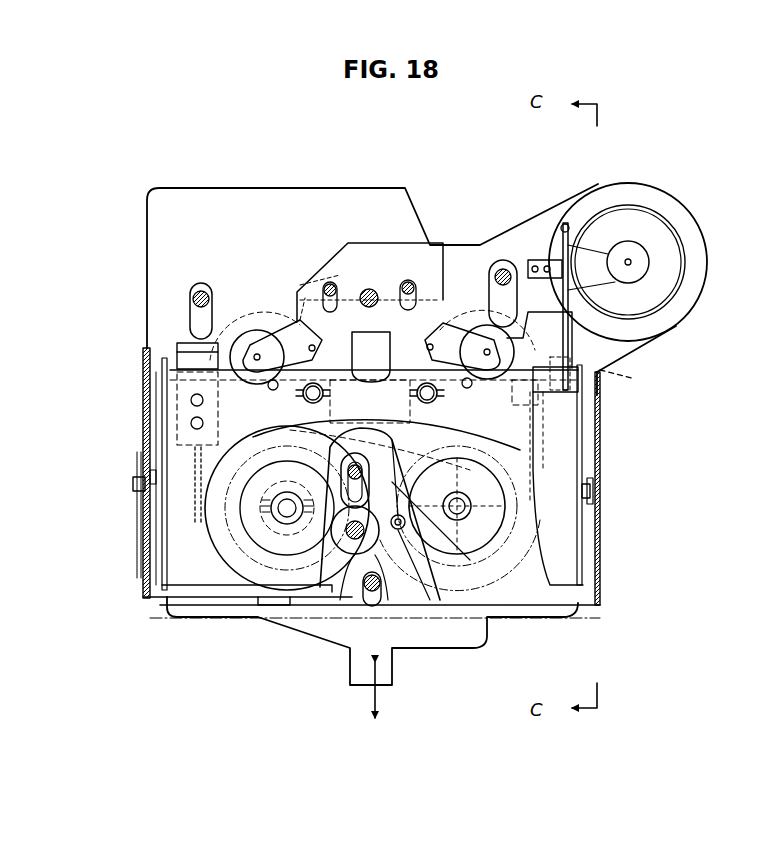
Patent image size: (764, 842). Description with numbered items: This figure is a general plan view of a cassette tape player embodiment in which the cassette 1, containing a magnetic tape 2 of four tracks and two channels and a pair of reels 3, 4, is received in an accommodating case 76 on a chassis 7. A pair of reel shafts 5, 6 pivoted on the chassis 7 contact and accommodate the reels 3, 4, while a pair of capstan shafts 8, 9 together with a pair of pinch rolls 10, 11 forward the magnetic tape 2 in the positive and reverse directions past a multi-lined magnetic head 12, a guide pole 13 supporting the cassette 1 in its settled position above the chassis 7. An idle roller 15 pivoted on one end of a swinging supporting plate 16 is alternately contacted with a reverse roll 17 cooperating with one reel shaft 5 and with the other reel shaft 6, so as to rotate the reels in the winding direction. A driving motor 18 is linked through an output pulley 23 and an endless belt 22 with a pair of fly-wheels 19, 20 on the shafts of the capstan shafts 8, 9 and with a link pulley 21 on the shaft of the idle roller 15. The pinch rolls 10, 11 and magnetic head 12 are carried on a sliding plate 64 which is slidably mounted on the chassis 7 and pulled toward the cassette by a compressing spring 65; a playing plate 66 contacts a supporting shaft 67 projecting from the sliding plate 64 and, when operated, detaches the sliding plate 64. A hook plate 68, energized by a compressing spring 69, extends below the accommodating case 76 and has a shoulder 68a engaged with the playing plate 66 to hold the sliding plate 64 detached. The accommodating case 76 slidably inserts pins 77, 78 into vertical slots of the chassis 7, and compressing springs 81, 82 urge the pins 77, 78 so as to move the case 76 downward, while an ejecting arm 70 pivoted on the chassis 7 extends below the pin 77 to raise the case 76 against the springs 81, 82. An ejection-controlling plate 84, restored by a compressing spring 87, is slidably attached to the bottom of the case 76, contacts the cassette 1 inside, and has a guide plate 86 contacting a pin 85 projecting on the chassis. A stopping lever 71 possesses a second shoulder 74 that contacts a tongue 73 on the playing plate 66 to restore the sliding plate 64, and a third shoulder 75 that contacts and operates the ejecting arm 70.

The cassette 1 is at (560, 620).
The magnetic tape 2 is at (547, 428).
The reel 3 is at (202, 565).
The reel 4 is at (505, 560).
The reel shaft 5 is at (280, 522).
The reel shaft 6 is at (462, 514).
The chassis 7 is at (600, 562).
The capstan shaft 8 is at (268, 393).
The capstan shaft 9 is at (453, 430).
The pinch roll 10 is at (255, 333).
The pinch roll 11 is at (555, 338).
The multi-lined magnetic head 12 is at (370, 347).
The guide pole 13 is at (305, 400).
The idle roller 15 is at (403, 567).
The swinging supporting plate 16 is at (392, 482).
The reverse roll 17 is at (343, 562).
The driving motor 18 is at (647, 222).
The fly-wheel 19 is at (266, 312).
The fly-wheel 20 is at (452, 303).
The link pulley 21 is at (405, 540).
The endless belt 22 is at (612, 262).
The output pulley 23 is at (650, 262).
The sliding plate 64 is at (338, 265).
The compressing spring 65 is at (407, 442).
The playing plate 66 is at (540, 320).
The supporting shaft 67 is at (368, 288).
The hook plate 68 is at (650, 343).
The shoulder 68a is at (634, 384).
The compressing spring 69 is at (563, 226).
The ejecting arm 70 is at (165, 600).
The stopping lever 71 is at (362, 690).
The tongue 73 is at (466, 328).
The second shoulder 74 is at (484, 328).
The third shoulder 75 is at (280, 608).
The accommodating case 76 is at (165, 540).
The pin 77 is at (134, 484).
The pin 78 is at (590, 487).
The compressing spring 81 is at (152, 505).
The compressing spring 82 is at (586, 500).
The ejection-controlling plate 84 is at (176, 350).
The pin 85 is at (146, 440).
The guide plate 86 is at (165, 390).
The compressing spring 87 is at (188, 492).